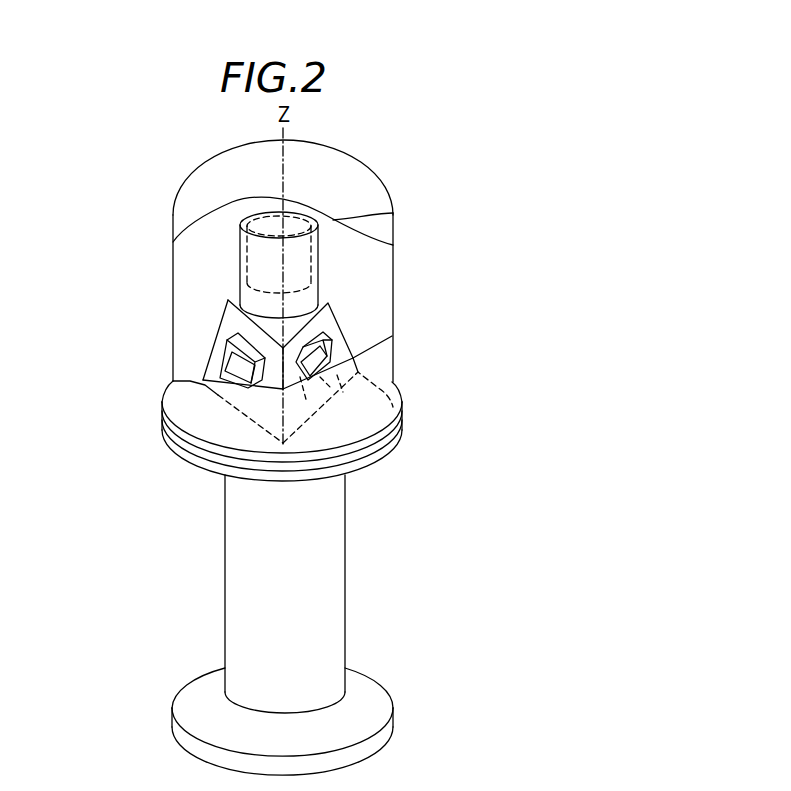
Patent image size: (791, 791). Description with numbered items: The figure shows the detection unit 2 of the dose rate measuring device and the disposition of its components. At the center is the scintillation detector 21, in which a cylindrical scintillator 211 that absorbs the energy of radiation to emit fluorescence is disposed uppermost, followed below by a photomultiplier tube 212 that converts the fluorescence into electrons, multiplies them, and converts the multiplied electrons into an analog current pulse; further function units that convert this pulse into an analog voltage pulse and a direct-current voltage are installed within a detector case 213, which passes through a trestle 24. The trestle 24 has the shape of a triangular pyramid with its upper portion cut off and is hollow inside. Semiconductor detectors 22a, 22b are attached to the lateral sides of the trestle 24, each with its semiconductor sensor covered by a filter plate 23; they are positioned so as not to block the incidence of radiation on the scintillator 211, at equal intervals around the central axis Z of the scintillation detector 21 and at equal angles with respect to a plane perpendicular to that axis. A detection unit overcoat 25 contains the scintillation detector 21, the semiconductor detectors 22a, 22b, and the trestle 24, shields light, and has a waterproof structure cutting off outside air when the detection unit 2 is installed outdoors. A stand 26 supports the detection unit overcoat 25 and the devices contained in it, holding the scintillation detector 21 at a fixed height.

The detection unit 2 is at (400, 665).
The scintillation detector 21 is at (351, 211).
The cylindrical scintillator 211 is at (272, 268).
The photomultiplier tube 212 is at (300, 298).
The detector case 213 is at (320, 252).
The semiconductor detector 22a is at (333, 347).
The semiconductor detector 22b is at (240, 347).
The filter plate 23 is at (238, 372).
The trestle 24 is at (315, 414).
The detection unit overcoat 25 is at (370, 177).
The stand 26 is at (345, 583).